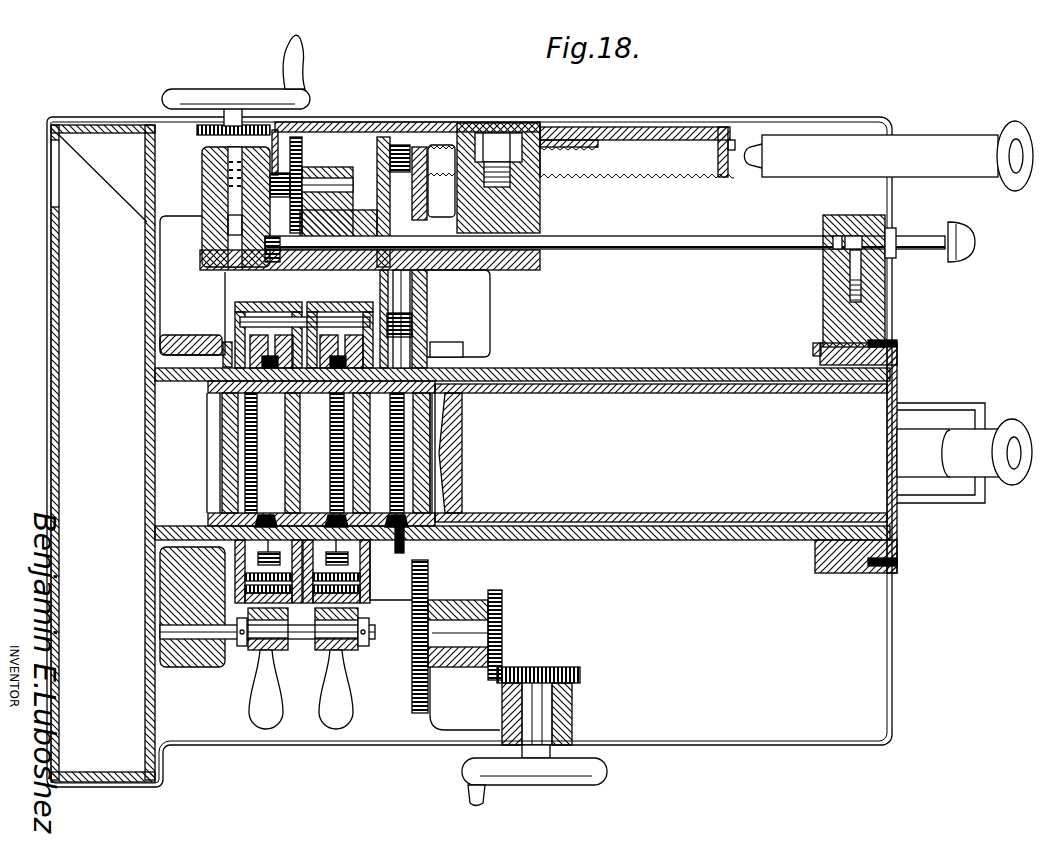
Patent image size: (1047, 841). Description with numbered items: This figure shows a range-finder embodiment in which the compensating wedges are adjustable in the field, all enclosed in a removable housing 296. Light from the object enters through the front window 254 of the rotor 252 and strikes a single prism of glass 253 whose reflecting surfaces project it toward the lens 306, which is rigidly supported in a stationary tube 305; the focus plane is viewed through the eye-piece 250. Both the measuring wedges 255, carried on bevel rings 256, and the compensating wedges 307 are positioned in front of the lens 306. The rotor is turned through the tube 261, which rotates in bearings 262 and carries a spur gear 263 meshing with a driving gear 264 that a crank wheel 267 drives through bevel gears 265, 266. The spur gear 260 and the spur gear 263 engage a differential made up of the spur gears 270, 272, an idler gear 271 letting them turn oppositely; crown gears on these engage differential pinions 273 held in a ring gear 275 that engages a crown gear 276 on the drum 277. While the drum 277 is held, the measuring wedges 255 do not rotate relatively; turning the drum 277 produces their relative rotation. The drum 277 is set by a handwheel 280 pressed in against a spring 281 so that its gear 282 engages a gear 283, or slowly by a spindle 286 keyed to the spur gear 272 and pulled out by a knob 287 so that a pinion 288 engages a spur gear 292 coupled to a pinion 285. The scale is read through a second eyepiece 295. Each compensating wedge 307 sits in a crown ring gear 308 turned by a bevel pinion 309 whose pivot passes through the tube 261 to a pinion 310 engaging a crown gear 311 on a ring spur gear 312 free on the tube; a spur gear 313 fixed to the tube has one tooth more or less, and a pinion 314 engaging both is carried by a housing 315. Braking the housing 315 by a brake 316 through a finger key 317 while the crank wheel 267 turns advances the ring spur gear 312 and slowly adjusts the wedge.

The eye-piece 250 is at (986, 434).
The rotor 252 is at (60, 536).
The prism of glass 253 is at (103, 220).
The front window 254 is at (52, 172).
The measuring wedges 255 is at (423, 430).
The bevel rings 256 is at (428, 460).
The spur gear 260 is at (367, 635).
The tube 261 is at (622, 540).
The bearings 262 is at (822, 571).
The spur gear 263 is at (410, 551).
The driving gear 264 is at (430, 589).
The bevel gear 265 is at (502, 600).
The bevel gear 266 is at (578, 676).
The crank wheel 267 is at (607, 772).
The spur gear 270 is at (385, 137).
The idler gear 271 is at (423, 350).
The spur gear 272 is at (432, 140).
The differential pinions 273 is at (420, 145).
The ring gear 275 is at (400, 145).
The crown gear 276 is at (600, 147).
The drum 277 is at (665, 127).
The handwheel 280 is at (208, 92).
The spring 281 is at (202, 178).
The gear 282 is at (198, 131).
The gear 283 is at (738, 128).
The pinion 285 is at (285, 172).
The spindle 286 is at (690, 240).
The knob 287 is at (968, 236).
The pinion 288 is at (270, 263).
The spur gear 292 is at (302, 148).
The eyepiece 295 is at (982, 138).
The housing 296 is at (772, 120).
The stationary tube 305 is at (695, 388).
The lens 306 is at (457, 491).
The compensating wedges 307 is at (290, 437).
The crown ring gear 308 is at (222, 456).
The bevel pinion 309 is at (250, 512).
The pinion 310 is at (200, 530).
The crown gear 311 is at (256, 325).
The ring spur gear 312 is at (222, 340).
The spur gear 313 is at (303, 318).
The pinion 314 is at (170, 586).
The housing 315 is at (266, 318).
The brake 316 is at (160, 627).
The finger key 317 is at (252, 712).